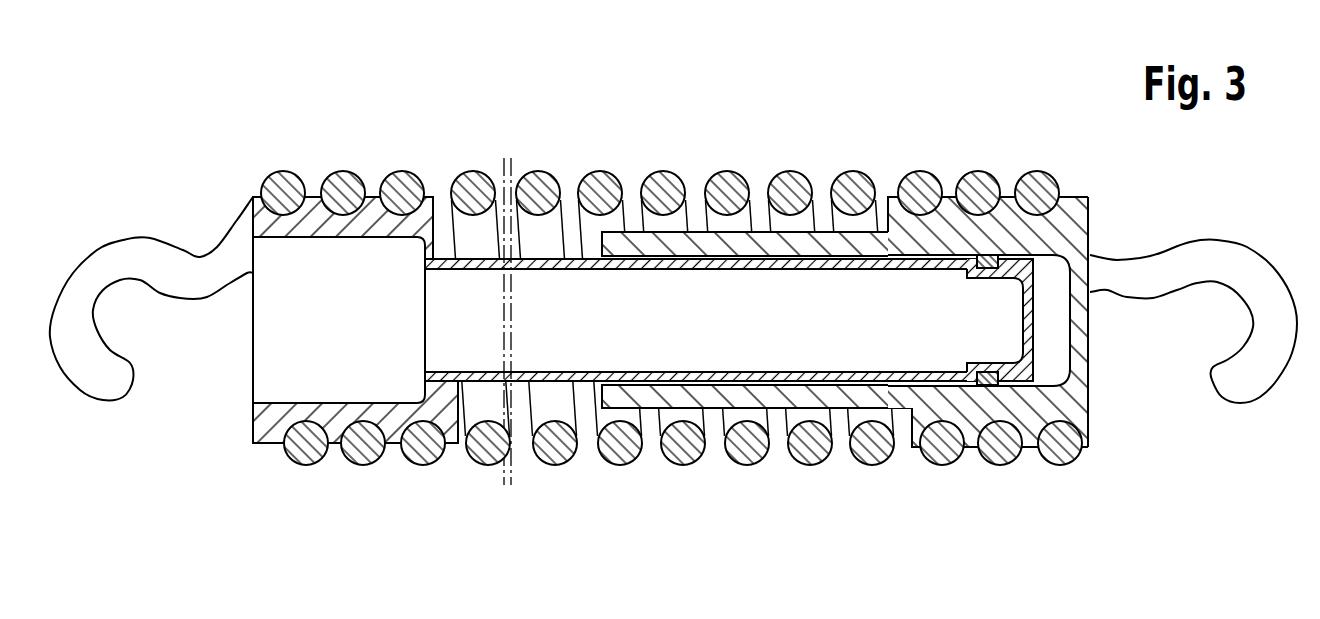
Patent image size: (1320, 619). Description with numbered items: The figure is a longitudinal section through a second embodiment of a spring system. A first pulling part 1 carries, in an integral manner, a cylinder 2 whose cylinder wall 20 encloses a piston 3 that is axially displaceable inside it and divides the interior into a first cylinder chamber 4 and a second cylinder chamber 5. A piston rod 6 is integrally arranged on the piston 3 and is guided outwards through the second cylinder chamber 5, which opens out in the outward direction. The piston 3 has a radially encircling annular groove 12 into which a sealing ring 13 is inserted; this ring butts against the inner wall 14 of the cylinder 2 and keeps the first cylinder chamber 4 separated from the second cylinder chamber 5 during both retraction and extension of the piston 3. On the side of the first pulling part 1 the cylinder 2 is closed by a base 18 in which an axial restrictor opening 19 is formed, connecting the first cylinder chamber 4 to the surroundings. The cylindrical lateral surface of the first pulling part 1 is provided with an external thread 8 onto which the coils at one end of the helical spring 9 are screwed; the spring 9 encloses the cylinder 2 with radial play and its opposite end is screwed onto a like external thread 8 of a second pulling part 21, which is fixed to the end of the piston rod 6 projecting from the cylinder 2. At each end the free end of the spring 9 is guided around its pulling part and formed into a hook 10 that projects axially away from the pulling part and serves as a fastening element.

The first pulling part 1 is at (1044, 318).
The cylinder 2 is at (701, 402).
The piston 3 is at (1027, 368).
The first cylinder chamber 4 is at (1052, 271).
The second cylinder chamber 5 is at (757, 256).
The piston rod 6 is at (712, 374).
The external thread 8 is at (671, 373).
The helical spring 9 is at (620, 448).
The hook 10 is at (100, 378).
The annular groove 12 is at (979, 380).
The sealing ring 13 is at (990, 382).
The inner wall 14 is at (758, 392).
The base 18 is at (1056, 402).
The axial restrictor opening 19 is at (1080, 322).
The cylinder wall 20 is at (648, 400).
The second pulling part 21 is at (273, 437).